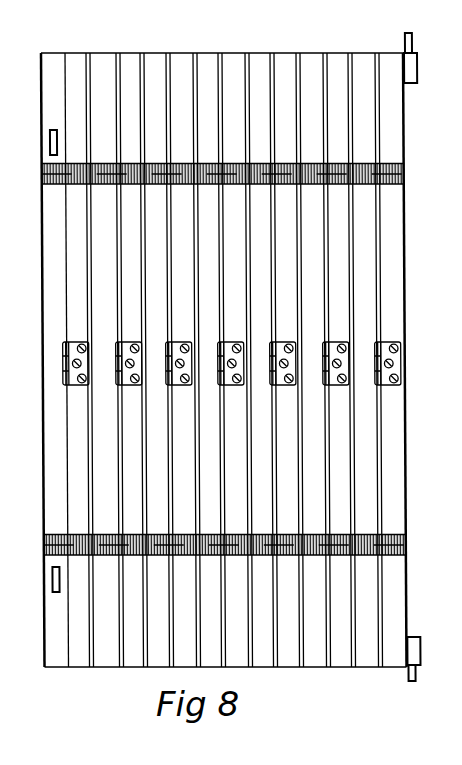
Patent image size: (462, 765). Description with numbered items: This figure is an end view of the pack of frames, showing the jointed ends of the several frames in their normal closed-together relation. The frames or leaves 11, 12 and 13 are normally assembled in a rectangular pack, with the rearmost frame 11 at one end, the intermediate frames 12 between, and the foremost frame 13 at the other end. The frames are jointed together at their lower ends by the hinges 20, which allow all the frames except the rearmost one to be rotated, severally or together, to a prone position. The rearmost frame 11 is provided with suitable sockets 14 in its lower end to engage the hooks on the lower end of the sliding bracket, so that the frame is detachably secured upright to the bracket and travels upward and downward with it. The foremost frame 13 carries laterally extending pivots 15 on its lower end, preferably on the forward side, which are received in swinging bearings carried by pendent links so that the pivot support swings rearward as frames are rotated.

The rearmost frame 11 is at (57, 41).
The frame 12 is at (103, 42).
The foremost frame 13 is at (398, 52).
The sockets 14 is at (50, 144).
The laterally extending pivots 15 is at (413, 44).
The hinges 20 is at (78, 387).